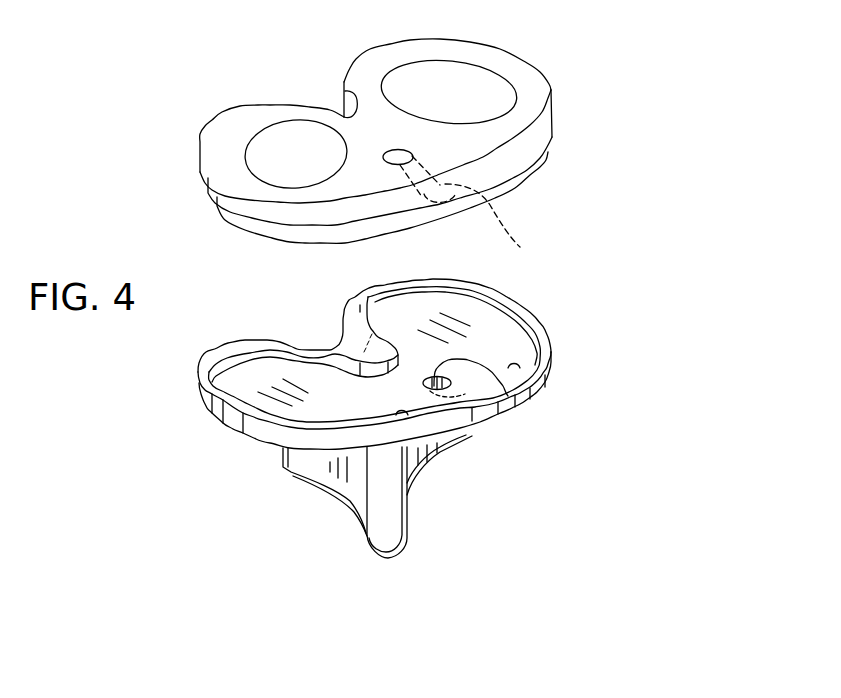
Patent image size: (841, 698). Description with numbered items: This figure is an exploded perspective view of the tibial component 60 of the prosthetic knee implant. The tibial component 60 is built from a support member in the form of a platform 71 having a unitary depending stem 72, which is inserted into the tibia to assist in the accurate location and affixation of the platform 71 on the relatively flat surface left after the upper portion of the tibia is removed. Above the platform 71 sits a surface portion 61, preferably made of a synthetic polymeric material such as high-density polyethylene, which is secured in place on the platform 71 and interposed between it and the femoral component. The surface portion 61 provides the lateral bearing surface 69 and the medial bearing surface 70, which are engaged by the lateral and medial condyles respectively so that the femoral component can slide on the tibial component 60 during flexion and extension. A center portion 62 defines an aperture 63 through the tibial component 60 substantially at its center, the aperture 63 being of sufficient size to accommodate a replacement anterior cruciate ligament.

The tibial component 60 is at (670, 2).
The surface portion 61 is at (575, 106).
The center portion 62 is at (413, 153).
The aperture 63 is at (545, 420).
The lateral bearing surface 69 is at (297, 147).
The medial bearing surface 70 is at (455, 87).
The platform 71 is at (180, 393).
The stem 72 is at (390, 532).